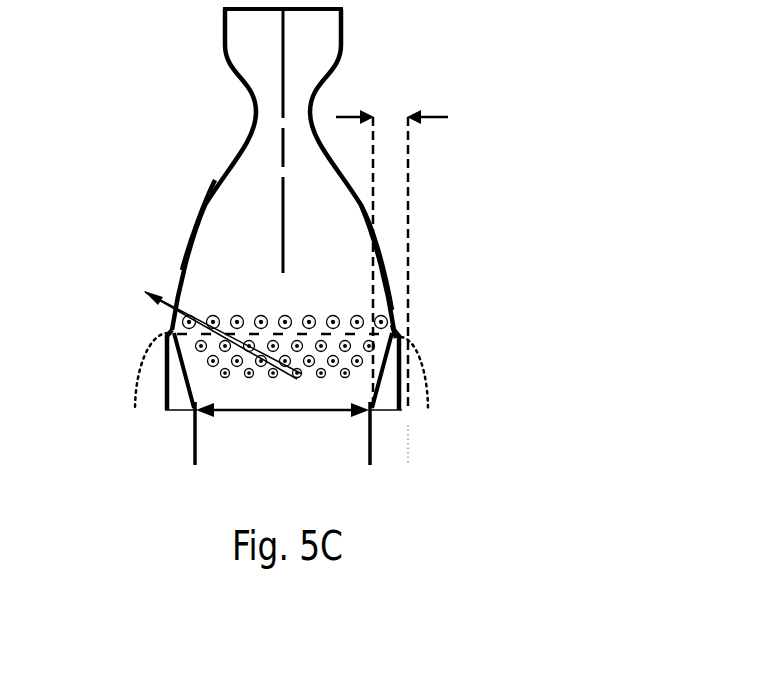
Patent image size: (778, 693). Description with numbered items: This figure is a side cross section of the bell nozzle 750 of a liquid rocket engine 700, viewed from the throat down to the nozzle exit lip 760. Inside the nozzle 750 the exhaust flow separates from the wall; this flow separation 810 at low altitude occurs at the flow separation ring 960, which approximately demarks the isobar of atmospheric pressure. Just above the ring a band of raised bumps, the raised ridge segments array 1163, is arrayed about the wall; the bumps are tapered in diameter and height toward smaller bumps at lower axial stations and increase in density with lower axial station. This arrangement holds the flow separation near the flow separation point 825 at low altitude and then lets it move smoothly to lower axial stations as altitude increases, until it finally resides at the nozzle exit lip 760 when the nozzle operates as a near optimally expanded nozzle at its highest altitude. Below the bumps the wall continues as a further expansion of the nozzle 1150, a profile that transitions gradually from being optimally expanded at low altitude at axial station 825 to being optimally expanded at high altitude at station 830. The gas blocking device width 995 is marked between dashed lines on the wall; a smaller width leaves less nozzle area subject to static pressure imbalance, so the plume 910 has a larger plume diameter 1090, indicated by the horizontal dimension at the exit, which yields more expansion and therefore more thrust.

The liquid rocket engine 700 is at (226, 19).
The nozzle 750 is at (218, 163).
The nozzle exit lip 760 is at (168, 420).
The flow separation 810 is at (384, 240).
The flow separation point 825 is at (404, 331).
The high-altitude optimally expanded axial station 830 is at (406, 409).
The plume 910 is at (285, 373).
The flow separation ring 960 is at (345, 332).
The gas blocking device width 995 is at (392, 100).
The plume diameter 1090 is at (297, 412).
The further expansion of the nozzle 1150 is at (146, 360).
The raised ridge segments array 1163 is at (190, 313).